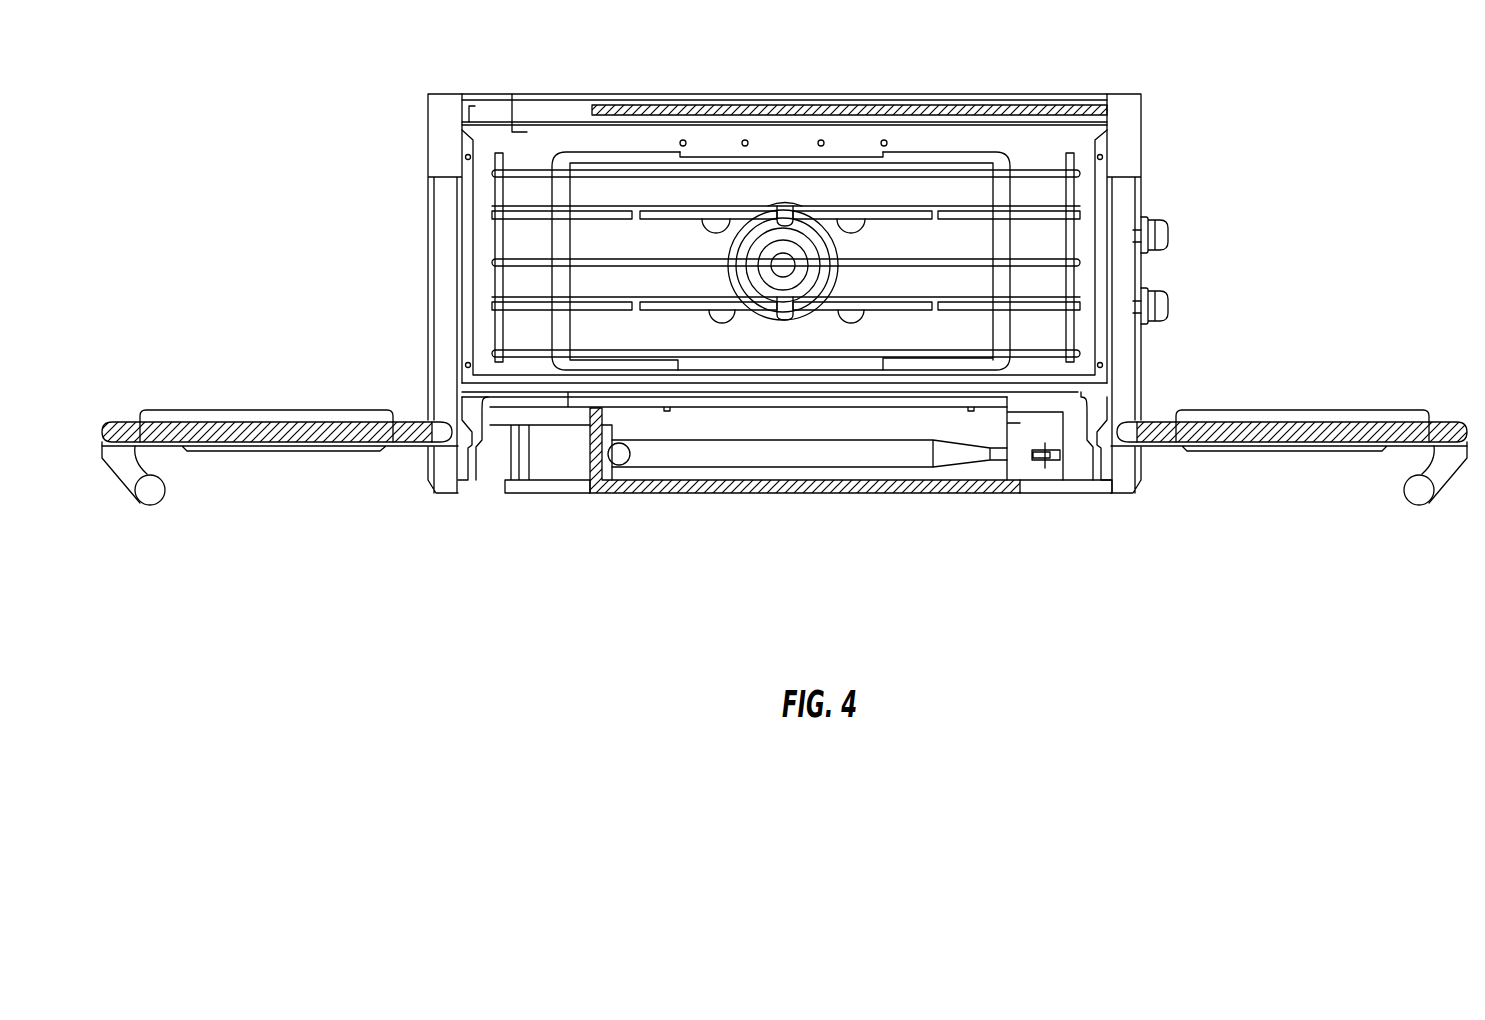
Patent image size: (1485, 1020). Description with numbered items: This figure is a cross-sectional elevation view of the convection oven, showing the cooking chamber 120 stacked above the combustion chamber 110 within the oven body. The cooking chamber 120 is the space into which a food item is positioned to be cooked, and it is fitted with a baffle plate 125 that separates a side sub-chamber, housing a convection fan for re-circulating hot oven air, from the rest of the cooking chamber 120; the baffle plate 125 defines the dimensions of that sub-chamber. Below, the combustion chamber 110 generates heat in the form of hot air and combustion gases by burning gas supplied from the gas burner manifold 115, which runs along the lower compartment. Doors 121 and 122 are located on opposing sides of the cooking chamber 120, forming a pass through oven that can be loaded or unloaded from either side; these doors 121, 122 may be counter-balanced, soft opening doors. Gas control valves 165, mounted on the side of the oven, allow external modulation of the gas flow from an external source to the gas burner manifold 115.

The combustion chamber 110 is at (677, 432).
The gas burner manifold 115 is at (778, 457).
The cooking chamber 120 is at (643, 195).
The door 121 is at (232, 413).
The door 122 is at (1373, 420).
The baffle plate 125 is at (950, 193).
The gas control valves 165 is at (1168, 237).